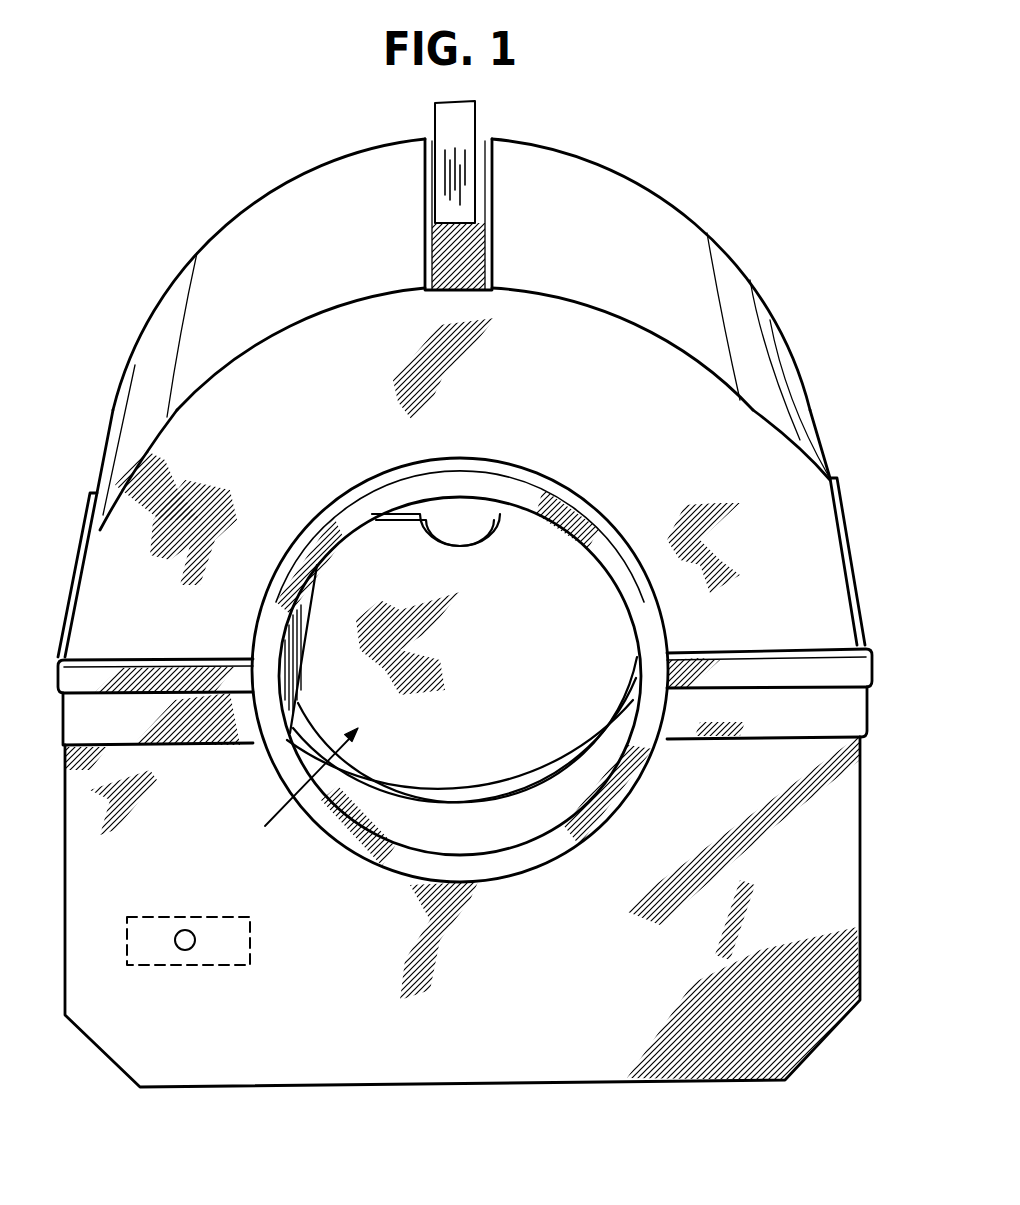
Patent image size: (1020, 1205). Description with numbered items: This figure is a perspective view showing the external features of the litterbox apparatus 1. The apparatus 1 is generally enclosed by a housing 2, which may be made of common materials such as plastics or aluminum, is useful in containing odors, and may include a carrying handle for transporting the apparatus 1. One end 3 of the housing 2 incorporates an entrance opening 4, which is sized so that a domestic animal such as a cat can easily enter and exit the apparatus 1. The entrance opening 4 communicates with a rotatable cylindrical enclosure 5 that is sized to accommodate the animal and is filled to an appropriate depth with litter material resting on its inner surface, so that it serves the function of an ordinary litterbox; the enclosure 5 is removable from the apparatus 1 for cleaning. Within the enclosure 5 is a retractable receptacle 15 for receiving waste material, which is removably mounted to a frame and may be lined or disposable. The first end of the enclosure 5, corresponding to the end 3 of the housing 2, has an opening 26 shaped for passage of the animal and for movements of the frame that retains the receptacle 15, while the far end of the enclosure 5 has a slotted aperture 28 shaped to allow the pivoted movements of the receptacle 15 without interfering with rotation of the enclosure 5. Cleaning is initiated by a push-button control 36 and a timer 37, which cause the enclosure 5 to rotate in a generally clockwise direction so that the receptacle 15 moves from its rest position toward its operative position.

The apparatus 1 is at (705, 192).
The housing 2 is at (648, 437).
The end of the housing 3 is at (885, 768).
The entrance opening 4 is at (398, 822).
The rotatable cylindrical enclosure 5 is at (503, 645).
The retractable receptacle 15 is at (302, 622).
The opening 26 is at (293, 787).
The slotted aperture 28 is at (470, 532).
The push-button control 36 is at (193, 948).
The timer 37 is at (250, 920).